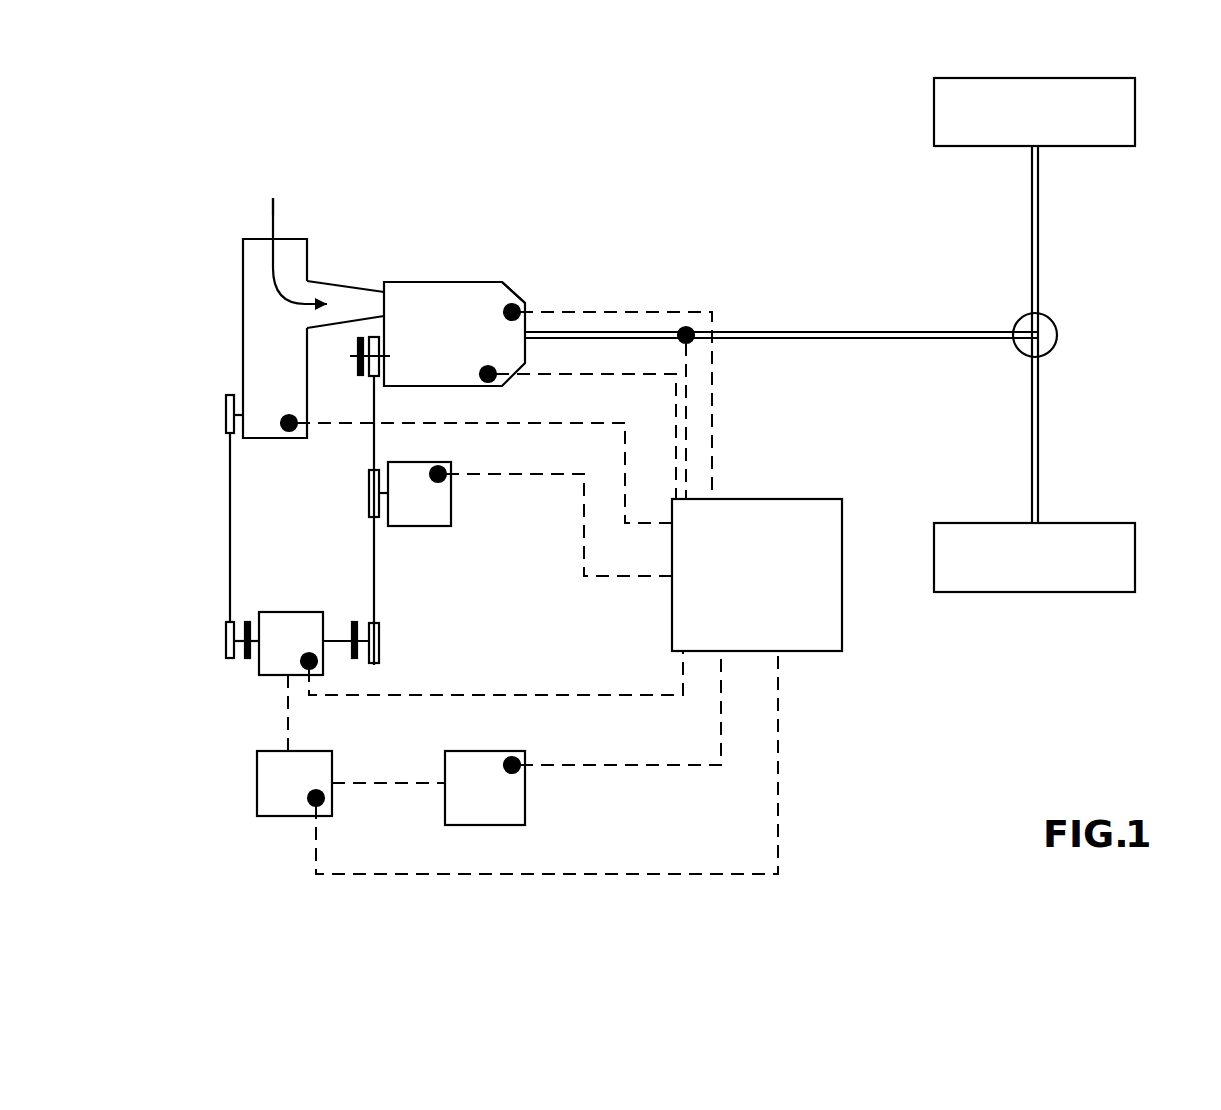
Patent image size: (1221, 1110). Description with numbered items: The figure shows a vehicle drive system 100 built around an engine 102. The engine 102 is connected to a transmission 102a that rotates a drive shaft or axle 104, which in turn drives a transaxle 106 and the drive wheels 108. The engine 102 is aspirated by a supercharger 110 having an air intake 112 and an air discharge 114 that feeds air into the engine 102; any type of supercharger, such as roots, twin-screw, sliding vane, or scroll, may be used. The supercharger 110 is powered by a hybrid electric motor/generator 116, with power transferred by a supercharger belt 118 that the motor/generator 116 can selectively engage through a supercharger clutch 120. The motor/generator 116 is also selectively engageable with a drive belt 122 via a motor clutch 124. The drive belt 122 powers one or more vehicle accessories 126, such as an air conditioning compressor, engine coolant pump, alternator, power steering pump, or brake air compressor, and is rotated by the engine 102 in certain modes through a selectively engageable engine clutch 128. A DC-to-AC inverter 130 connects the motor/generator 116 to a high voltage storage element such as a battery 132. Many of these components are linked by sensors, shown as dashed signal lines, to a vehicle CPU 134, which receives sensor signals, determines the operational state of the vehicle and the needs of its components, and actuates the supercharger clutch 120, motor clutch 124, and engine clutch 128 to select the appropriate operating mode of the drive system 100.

The vehicle drive system 100 is at (568, 137).
The engine 102 is at (454, 334).
The transmission 102a is at (506, 297).
The drive shaft or axle 104 is at (790, 332).
The transaxle 106 is at (1035, 257).
The drive wheels 108 is at (1034, 335).
The supercharger 110 is at (255, 328).
The air intake 112 is at (254, 230).
The air discharge 114 is at (368, 300).
The hybrid electric motor/generator 116 is at (288, 620).
The supercharger belt 118 is at (230, 517).
The supercharger clutch 120 is at (247, 660).
The drive belt 122 is at (374, 585).
The motor clutch 124 is at (354, 625).
The vehicle accessories 126 is at (443, 508).
The engine clutch 128 is at (358, 370).
The DC-to-AC inverter 130 is at (273, 786).
The battery 132 is at (515, 808).
The vehicle CPU 134 is at (757, 575).